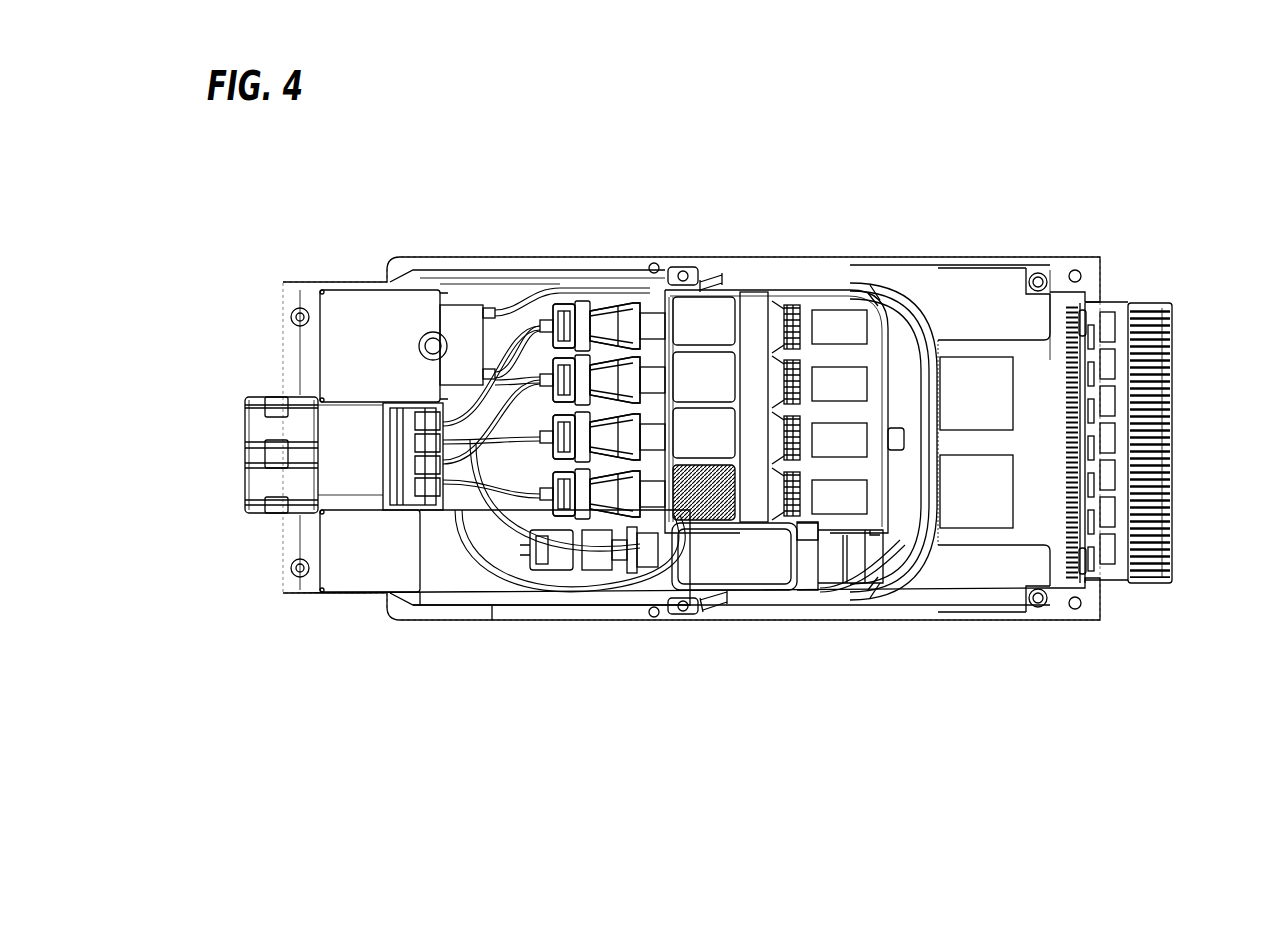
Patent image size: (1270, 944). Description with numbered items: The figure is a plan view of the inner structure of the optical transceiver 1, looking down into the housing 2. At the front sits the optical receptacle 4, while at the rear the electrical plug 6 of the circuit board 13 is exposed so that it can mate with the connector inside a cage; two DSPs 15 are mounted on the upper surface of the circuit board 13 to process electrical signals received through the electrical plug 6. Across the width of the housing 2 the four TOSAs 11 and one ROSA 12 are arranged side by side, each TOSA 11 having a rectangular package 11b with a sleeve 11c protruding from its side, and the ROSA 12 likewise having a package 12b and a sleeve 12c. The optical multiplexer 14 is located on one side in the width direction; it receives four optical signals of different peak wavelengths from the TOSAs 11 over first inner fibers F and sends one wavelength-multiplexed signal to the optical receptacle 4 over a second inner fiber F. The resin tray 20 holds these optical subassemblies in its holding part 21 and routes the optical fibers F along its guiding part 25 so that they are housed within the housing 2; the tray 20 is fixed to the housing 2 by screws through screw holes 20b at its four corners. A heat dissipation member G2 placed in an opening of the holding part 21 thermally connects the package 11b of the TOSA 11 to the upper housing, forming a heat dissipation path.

The optical transceiver 1 is at (1055, 178).
The housing 2 is at (896, 257).
The optical receptacle 4 is at (257, 470).
The electrical plug 6 is at (1160, 430).
The TOSA 11 is at (612, 643).
The package 11b is at (605, 322).
The sleeve 11c is at (600, 315).
The ROSA 12 is at (758, 578).
The package 12b is at (735, 580).
The sleeve 12c is at (572, 548).
The circuit board 13 is at (1028, 530).
The optical multiplexer 14 is at (370, 312).
The DSP 15 is at (993, 380).
The tray 20 is at (915, 280).
The screw hole 20b is at (680, 270).
The holding part 21 is at (722, 435).
The guiding part 25 is at (925, 300).
The optical fiber F is at (800, 285).
The heat dissipation member G2 is at (700, 512).